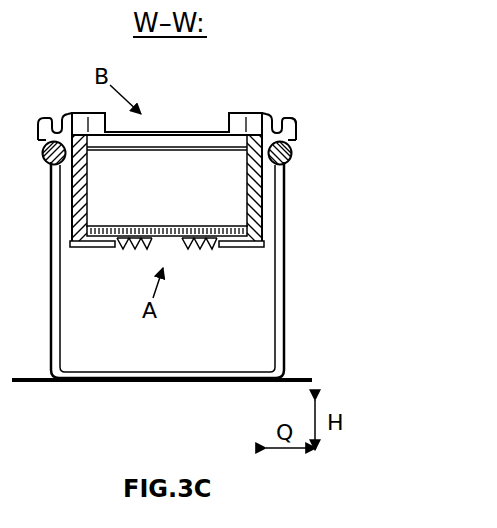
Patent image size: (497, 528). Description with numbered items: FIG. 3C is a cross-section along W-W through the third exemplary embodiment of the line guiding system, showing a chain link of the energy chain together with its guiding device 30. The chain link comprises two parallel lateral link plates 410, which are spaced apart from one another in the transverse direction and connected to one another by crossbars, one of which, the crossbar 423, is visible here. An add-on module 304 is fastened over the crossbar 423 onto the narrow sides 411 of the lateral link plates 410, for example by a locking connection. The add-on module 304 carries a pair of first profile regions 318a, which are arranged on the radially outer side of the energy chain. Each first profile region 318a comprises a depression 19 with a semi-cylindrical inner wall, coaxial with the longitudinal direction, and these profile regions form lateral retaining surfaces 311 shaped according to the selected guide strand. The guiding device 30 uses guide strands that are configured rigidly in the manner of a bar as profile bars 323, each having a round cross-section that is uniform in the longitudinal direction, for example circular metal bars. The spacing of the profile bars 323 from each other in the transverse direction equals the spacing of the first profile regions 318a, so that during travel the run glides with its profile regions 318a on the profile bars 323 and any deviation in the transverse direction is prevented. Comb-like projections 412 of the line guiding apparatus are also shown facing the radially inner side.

The depression 19 is at (42, 122).
The guiding device 30 is at (310, 184).
The add-on module 304 is at (185, 140).
The lateral retaining surface 311 is at (66, 126).
The first profile region 318a is at (277, 112).
The profile bar 323 is at (47, 163).
The lateral link plate 410 is at (264, 232).
The narrow side 411 is at (297, 123).
The comb-like projection 412 is at (208, 250).
The crossbar 423 is at (163, 152).